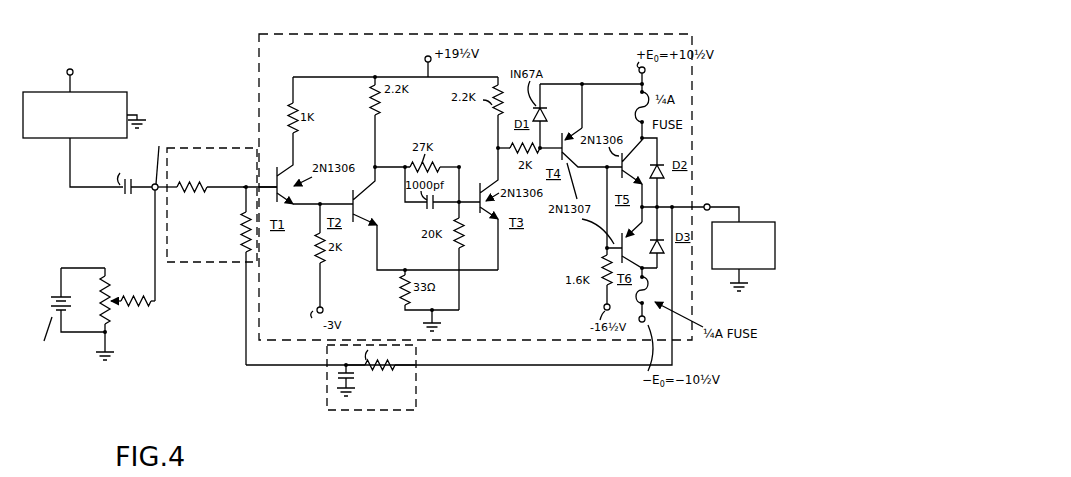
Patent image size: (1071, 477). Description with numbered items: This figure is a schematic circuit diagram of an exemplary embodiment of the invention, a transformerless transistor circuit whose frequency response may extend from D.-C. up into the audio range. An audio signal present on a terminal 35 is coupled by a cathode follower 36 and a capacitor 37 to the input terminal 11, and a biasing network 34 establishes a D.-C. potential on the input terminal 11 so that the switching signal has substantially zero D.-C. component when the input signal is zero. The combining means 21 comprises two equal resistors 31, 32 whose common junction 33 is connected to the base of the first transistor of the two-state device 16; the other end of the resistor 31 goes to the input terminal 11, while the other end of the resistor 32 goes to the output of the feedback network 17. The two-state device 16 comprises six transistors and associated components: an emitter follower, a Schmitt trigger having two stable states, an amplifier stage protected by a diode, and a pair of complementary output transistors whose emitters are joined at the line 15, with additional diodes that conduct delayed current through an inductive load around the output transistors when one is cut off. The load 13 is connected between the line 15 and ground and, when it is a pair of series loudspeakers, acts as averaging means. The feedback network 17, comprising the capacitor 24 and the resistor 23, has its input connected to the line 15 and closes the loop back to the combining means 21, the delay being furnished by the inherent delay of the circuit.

The input terminal 11 is at (162, 150).
The load 13 is at (763, 221).
The line 15 is at (712, 204).
The two-state device 16 is at (588, 35).
The feedback network 17 is at (418, 398).
The combining means 21 is at (216, 263).
The resistor 23 is at (400, 367).
The capacitor 24 is at (336, 380).
The resistor 31 is at (202, 191).
The resistor 32 is at (242, 216).
The common junction 33 is at (226, 184).
The biasing network 34 is at (50, 283).
The terminal 35 is at (73, 72).
The cathode follower 36 is at (106, 91).
The capacitor 37 is at (121, 191).